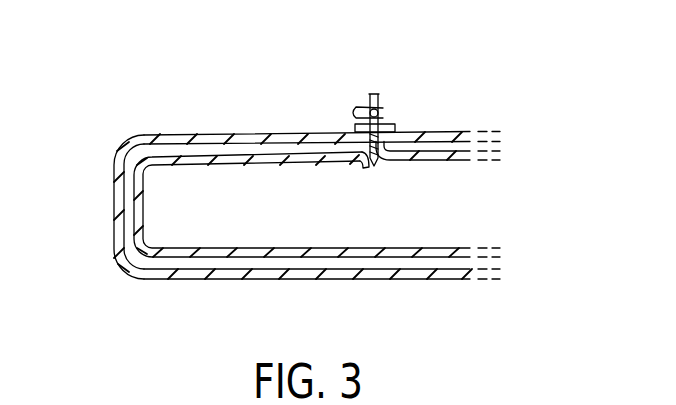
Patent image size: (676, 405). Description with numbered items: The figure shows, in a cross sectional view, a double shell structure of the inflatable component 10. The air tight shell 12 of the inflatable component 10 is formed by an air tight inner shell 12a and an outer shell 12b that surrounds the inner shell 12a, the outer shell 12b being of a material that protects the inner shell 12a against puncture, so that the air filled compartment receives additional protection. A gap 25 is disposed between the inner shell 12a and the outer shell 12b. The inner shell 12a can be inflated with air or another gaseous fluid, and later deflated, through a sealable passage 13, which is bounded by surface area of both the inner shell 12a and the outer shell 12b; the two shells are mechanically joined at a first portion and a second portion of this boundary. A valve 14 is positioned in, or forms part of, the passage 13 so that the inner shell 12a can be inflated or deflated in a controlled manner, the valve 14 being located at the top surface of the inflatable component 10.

The inflatable component 10 is at (468, 110).
The air tight shell 12 is at (232, 121).
The inner shell 12a is at (415, 250).
The outer shell 12b is at (416, 128).
The sealable passage 13 is at (375, 172).
The valve 14 is at (372, 92).
The gap 25 is at (127, 213).